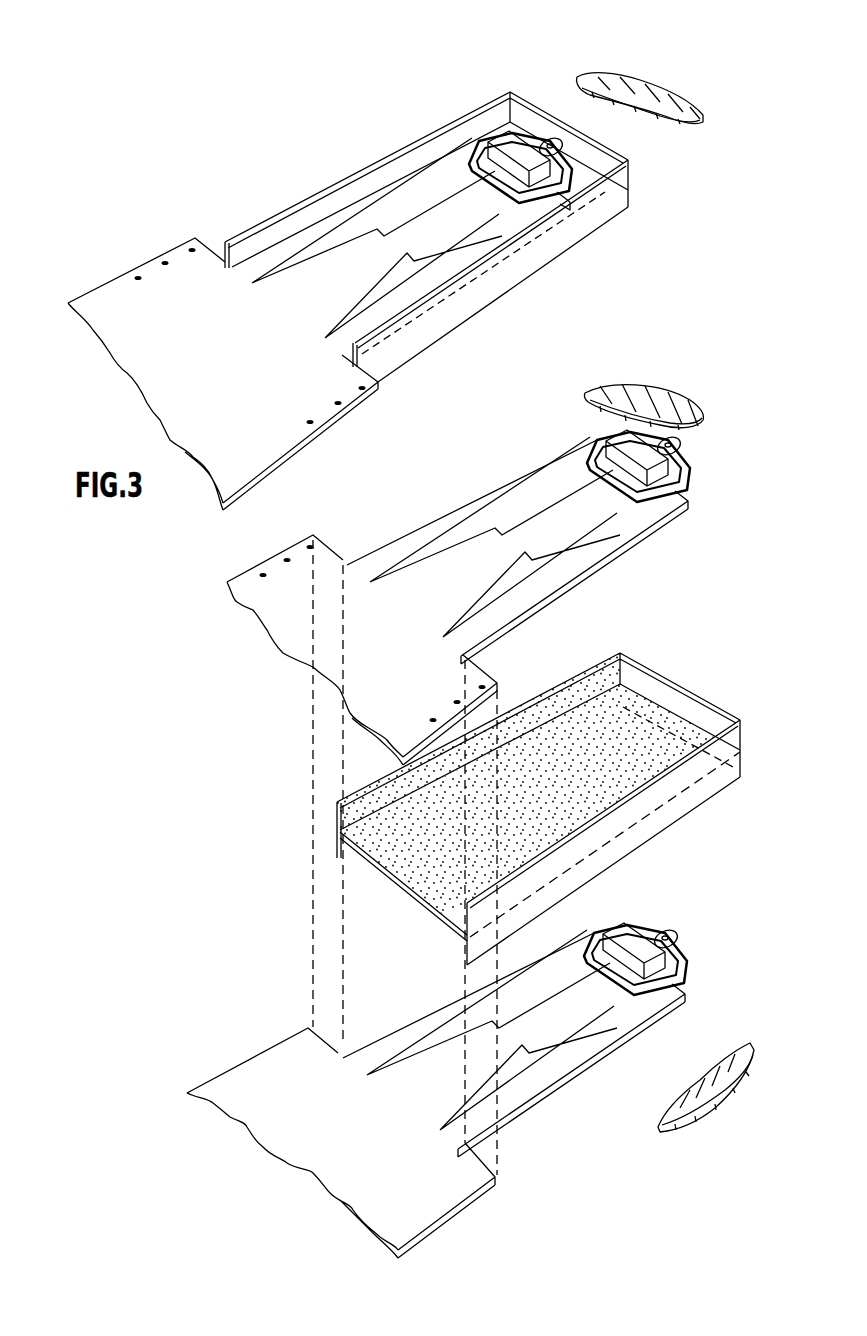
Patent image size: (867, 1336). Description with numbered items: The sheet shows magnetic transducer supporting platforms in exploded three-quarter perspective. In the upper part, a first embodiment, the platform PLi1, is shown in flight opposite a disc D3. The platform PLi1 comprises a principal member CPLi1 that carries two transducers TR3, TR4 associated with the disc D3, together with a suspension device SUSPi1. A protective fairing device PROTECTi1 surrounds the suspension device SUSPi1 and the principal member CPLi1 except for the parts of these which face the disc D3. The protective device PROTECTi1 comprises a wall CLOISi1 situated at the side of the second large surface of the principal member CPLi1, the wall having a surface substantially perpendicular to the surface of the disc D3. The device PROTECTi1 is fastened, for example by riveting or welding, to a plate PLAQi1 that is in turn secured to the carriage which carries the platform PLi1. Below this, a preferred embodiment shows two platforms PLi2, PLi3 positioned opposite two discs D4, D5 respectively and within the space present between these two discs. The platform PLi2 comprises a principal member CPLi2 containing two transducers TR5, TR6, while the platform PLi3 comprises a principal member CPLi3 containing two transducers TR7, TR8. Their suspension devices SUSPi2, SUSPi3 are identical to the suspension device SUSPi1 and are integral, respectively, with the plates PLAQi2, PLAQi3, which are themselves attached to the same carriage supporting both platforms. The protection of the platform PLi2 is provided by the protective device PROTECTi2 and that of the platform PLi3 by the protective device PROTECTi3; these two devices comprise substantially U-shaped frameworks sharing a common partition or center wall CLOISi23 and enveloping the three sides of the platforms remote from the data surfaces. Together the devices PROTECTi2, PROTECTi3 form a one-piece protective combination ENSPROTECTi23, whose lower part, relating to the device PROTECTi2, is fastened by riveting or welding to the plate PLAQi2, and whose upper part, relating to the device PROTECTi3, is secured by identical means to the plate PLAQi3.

The plate PLAQi1 is at (290, 440).
The suspension device SUSPi1 is at (407, 227).
The protective fairing device PROTECTi1 is at (523, 282).
The wall CLOISi1 is at (433, 327).
The platform PLi1 is at (448, 364).
The principal member CPLi1 is at (555, 160).
The transducer TR3 is at (527, 193).
The transducer TR4 is at (560, 170).
The disc D3 is at (697, 127).
The plate PLAQi3 is at (293, 547).
The suspension device SUSPi3 is at (522, 470).
The platform PLi3 is at (580, 673).
The principal member CPLi3 is at (687, 453).
The transducer TR7 is at (645, 507).
The transducer TR8 is at (688, 485).
The disc D5 is at (642, 392).
The one-piece protective combination ENSPROTECTi23 is at (333, 831).
The protective fairing device PROTECTi3 is at (662, 673).
The common partition CLOISi23 is at (693, 727).
The protective fairing device PROTECTi2 is at (733, 763).
The platform PLi2 is at (620, 920).
The plate PLAQi2 is at (467, 1202).
The suspension device SUSPi2 is at (605, 1050).
The principal member CPLi2 is at (670, 955).
The transducer TR5 is at (647, 977).
The transducer TR6 is at (680, 968).
The disc D4 is at (693, 1117).